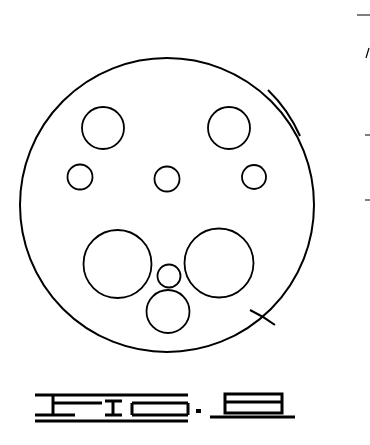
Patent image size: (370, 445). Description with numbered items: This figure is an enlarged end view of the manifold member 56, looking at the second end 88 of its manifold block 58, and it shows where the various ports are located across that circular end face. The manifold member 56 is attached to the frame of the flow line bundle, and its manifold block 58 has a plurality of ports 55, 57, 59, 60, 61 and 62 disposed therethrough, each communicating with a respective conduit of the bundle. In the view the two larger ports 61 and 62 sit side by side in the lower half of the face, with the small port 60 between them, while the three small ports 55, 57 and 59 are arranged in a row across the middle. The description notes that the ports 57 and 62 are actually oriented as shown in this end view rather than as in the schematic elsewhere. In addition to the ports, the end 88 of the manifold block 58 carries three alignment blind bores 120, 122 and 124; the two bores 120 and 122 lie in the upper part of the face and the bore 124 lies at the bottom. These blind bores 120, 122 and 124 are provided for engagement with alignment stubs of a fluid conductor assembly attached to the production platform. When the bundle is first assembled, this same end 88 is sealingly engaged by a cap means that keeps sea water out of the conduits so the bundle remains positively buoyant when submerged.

The manifold member 56 is at (234, 71).
The manifold block 58 is at (280, 108).
The second end of manifold block 88 is at (267, 296).
The alignment blind bore 120 is at (104, 113).
The alignment blind bore 122 is at (224, 112).
The port 55 is at (89, 172).
The port 57 is at (177, 172).
The port 59 is at (260, 168).
The port 61 is at (126, 238).
The port 62 is at (223, 233).
The port 60 is at (163, 266).
The alignment blind bore 124 is at (184, 310).